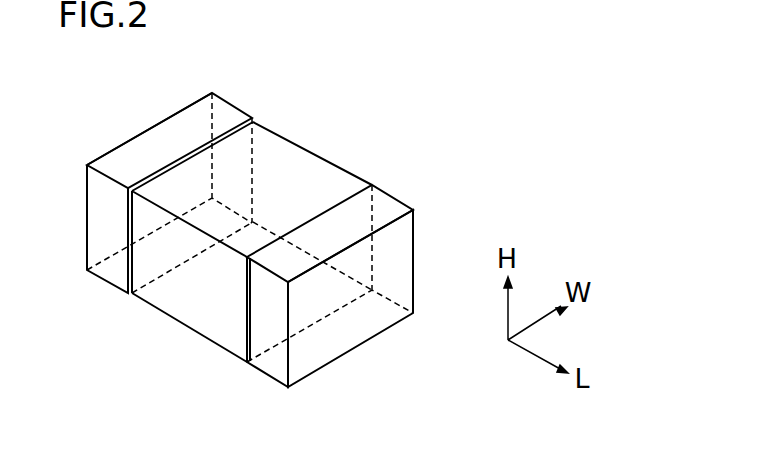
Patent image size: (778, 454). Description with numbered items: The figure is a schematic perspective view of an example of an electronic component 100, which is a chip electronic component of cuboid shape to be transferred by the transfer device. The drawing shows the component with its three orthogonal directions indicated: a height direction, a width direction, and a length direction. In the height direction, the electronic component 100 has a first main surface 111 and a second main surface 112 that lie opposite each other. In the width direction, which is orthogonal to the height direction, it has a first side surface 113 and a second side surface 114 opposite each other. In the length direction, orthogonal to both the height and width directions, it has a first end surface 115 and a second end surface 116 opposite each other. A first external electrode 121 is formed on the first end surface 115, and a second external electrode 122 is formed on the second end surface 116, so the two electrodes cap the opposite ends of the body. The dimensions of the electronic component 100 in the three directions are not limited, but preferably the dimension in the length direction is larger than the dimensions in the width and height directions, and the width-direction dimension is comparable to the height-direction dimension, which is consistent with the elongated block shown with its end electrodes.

The electronic component 100 is at (418, 117).
The first main surface 111 is at (228, 313).
The second main surface 112 is at (262, 148).
The first side surface 113 is at (168, 287).
The second side surface 114 is at (302, 193).
The first end surface 115 is at (352, 327).
The second end surface 116 is at (138, 158).
The first external electrode 121 is at (387, 205).
The second external electrode 122 is at (217, 107).